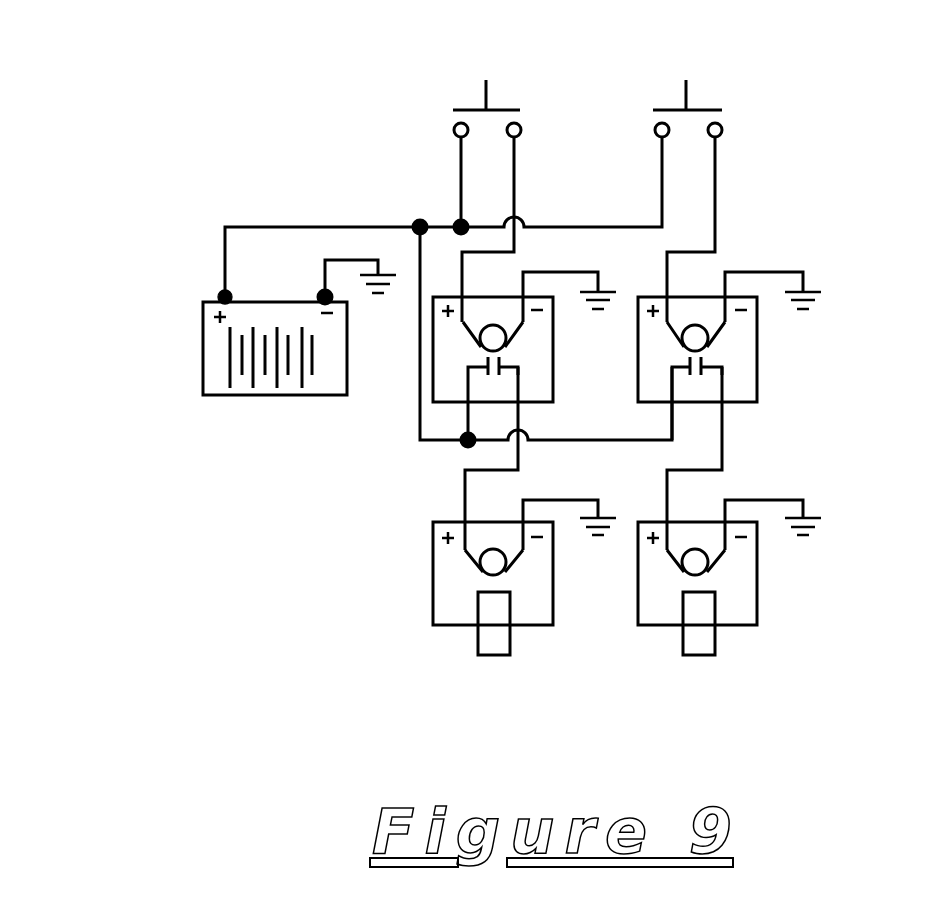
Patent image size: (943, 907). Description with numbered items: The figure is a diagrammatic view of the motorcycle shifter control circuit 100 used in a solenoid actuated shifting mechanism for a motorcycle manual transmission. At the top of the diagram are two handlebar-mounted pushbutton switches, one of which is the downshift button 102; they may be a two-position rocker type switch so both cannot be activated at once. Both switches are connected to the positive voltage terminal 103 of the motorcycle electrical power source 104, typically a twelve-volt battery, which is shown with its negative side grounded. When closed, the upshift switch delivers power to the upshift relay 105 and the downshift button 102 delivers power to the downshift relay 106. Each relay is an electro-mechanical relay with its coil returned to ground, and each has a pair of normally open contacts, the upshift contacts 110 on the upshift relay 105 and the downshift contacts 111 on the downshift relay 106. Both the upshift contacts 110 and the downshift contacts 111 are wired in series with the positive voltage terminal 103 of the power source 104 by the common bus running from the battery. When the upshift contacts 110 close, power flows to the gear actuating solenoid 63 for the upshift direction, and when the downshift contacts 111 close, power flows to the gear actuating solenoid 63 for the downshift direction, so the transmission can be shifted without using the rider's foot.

The motorcycle shifter control circuit 100 is at (483, 108).
The downshift button 102 is at (685, 108).
The positive voltage terminal 103 is at (218, 295).
The motorcycle electrical power source 104 is at (230, 396).
The upshift relay 105 is at (453, 368).
The downshift relay 106 is at (737, 362).
The upshift contacts 110 is at (488, 377).
The downshift contacts 111 is at (707, 374).
The gear actuating solenoid 63 is at (452, 585).